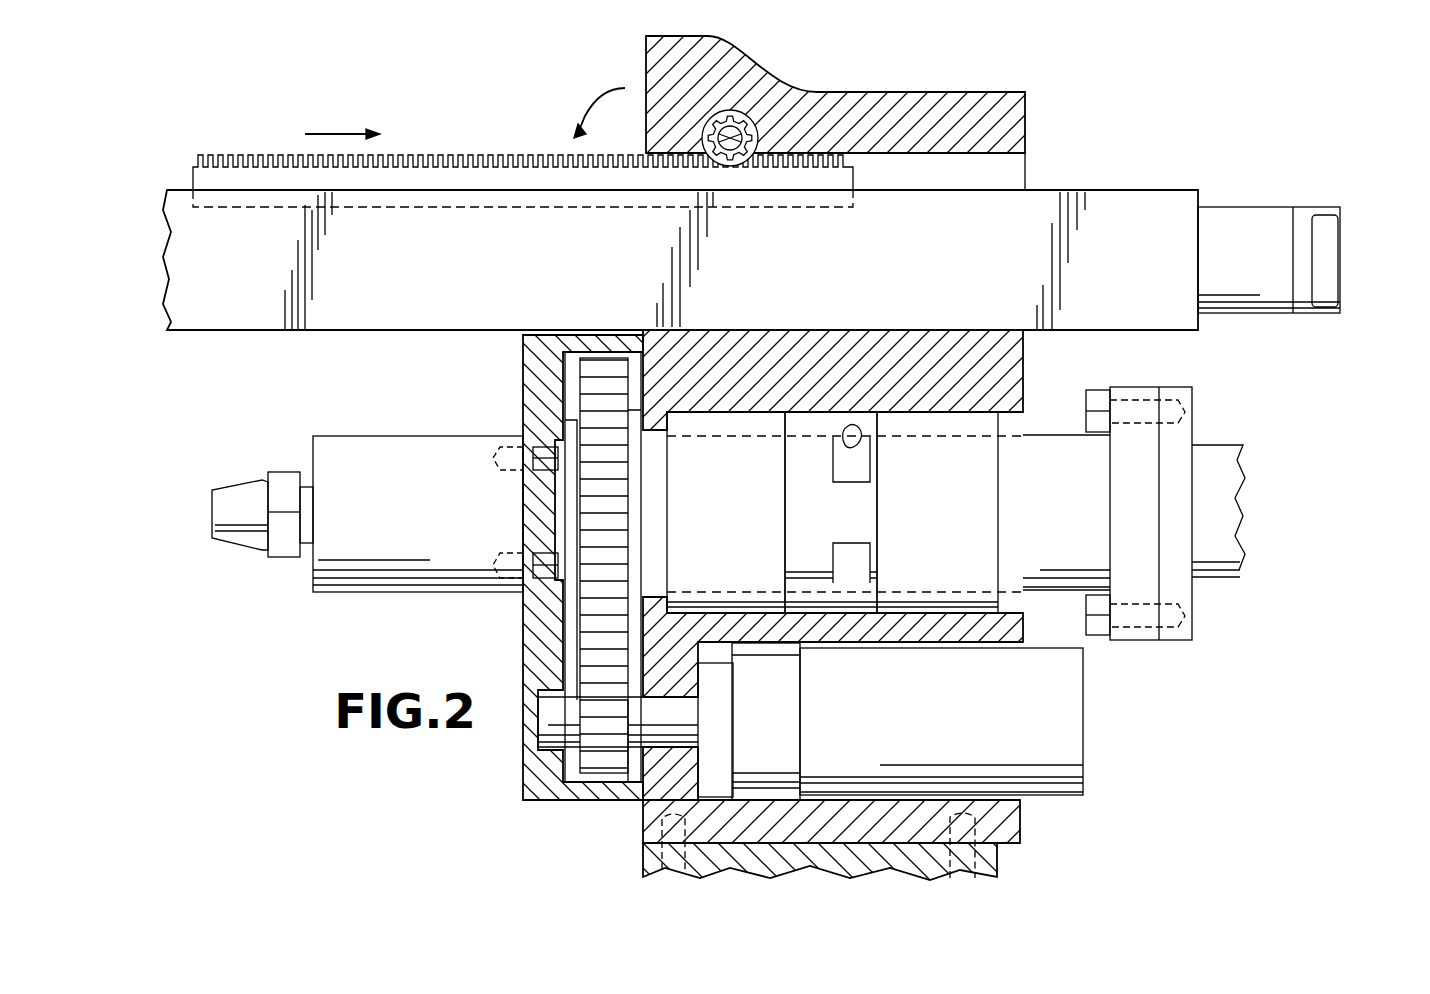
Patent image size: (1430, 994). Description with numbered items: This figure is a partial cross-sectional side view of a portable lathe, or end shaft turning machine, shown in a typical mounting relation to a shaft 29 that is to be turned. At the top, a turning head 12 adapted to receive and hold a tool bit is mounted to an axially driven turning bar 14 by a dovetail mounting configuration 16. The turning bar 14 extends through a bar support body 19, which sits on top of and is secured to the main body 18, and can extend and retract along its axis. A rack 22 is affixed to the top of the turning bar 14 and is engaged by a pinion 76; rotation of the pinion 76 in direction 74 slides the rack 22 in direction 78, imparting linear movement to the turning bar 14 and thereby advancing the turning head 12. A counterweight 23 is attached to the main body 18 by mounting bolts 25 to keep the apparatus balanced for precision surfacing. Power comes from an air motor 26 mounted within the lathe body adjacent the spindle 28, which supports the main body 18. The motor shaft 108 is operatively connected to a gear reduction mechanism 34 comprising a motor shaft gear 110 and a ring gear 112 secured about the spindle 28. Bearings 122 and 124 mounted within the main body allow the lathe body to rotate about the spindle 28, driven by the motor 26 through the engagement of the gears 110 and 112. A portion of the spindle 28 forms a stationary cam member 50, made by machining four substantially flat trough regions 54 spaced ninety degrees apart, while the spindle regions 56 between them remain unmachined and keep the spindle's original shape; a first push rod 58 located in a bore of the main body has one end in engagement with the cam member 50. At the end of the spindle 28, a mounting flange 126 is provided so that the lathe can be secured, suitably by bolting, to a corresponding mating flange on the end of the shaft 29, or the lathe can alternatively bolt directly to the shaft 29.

The turning head 12 is at (1330, 263).
The turning bar 14 is at (1164, 200).
The dovetail mounting configuration 16 is at (1297, 192).
The main body 18 is at (1020, 823).
The bar support body 19 is at (1026, 127).
The rack 22 is at (458, 155).
The counterweight 23 is at (855, 870).
The mounting bolts 25 is at (975, 858).
The air motor 26 is at (1083, 725).
The spindle 28 is at (1057, 443).
The shaft 29 is at (1232, 443).
The gear reduction mechanism 34 is at (506, 760).
The stationary cam member 50 is at (858, 503).
The trough regions 54 is at (843, 465).
The spindle regions 56 is at (845, 522).
The first push rod 58 is at (843, 422).
The direction of pinion rotation 74 is at (586, 93).
The pinion 76 is at (745, 118).
The direction of rack movement 78 is at (340, 133).
The motor shaft 108 is at (690, 718).
The motor shaft gear 110 is at (592, 775).
The ring gear 112 is at (575, 637).
The bearing 122 is at (698, 523).
The bearing 124 is at (912, 533).
The mounting flange 126 is at (1138, 387).